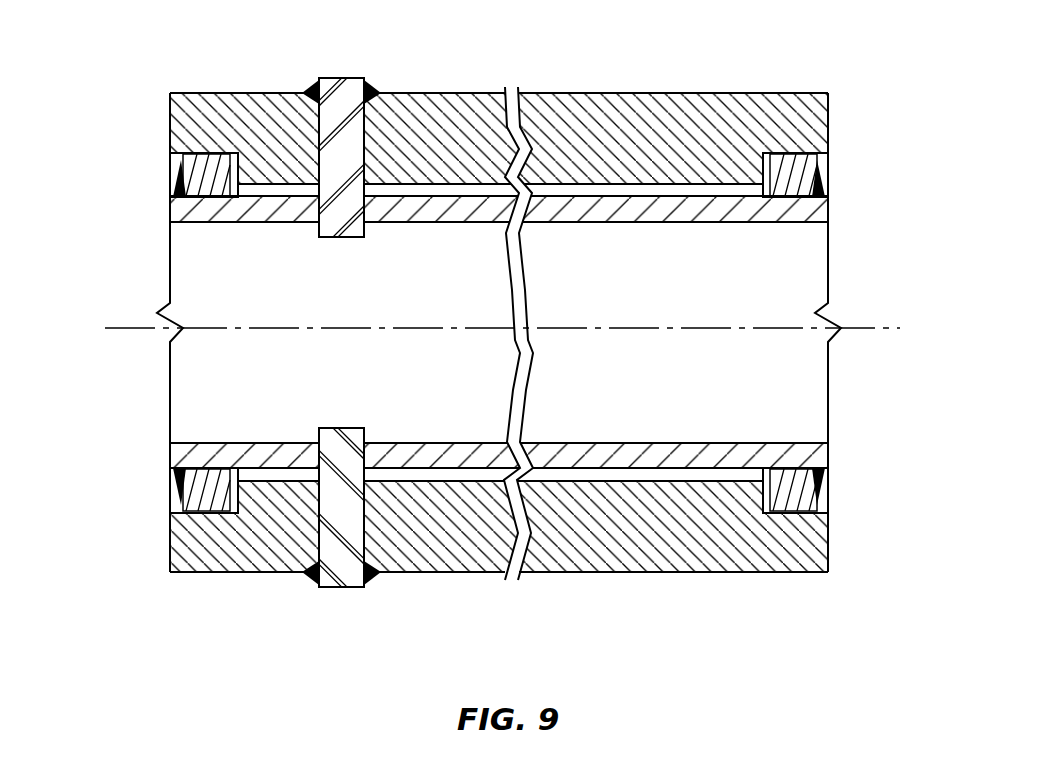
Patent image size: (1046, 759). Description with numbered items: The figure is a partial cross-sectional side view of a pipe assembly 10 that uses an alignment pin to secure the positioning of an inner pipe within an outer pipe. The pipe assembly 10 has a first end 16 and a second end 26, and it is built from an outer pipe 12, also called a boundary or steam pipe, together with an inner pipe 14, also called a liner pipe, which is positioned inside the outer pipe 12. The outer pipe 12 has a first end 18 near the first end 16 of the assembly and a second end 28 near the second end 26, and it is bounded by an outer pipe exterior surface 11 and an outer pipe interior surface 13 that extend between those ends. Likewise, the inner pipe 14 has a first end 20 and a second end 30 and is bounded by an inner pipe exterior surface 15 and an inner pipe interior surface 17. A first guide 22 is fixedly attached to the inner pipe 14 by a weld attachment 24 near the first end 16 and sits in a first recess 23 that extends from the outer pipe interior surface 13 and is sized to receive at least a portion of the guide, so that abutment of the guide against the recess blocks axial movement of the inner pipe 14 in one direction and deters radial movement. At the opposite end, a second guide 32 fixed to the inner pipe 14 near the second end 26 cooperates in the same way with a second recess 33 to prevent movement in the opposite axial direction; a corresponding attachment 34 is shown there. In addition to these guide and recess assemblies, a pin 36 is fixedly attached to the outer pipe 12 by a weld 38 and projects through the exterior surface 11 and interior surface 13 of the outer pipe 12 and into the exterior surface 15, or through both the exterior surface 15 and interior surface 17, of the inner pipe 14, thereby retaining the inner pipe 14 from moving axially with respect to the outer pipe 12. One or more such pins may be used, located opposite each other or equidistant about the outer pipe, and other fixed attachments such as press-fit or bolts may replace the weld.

The pipe assembly 10 is at (740, 57).
The outer pipe exterior surface 11 is at (402, 93).
The outer pipe 12 is at (474, 150).
The outer pipe interior surface 13 is at (428, 184).
The inner pipe 14 is at (474, 222).
The inner pipe exterior surface 15 is at (577, 196).
The first end of pipe assembly 16 is at (904, 110).
The inner pipe interior surface 17 is at (600, 222).
The first end of outer pipe 18 is at (829, 110).
The first end of inner pipe 20 is at (830, 207).
The first guide 22 is at (778, 186).
The first recess 23 is at (790, 124).
The weld attachment 24 is at (820, 180).
The second end of pipe assembly 26 is at (97, 110).
The second end of outer pipe 28 is at (169, 110).
The second end of inner pipe 30 is at (169, 207).
The second guide 32 is at (198, 186).
The second recess 33 is at (232, 117).
The first wedge 34 is at (178, 177).
The pin 36 is at (348, 77).
The weld 38 is at (309, 81).